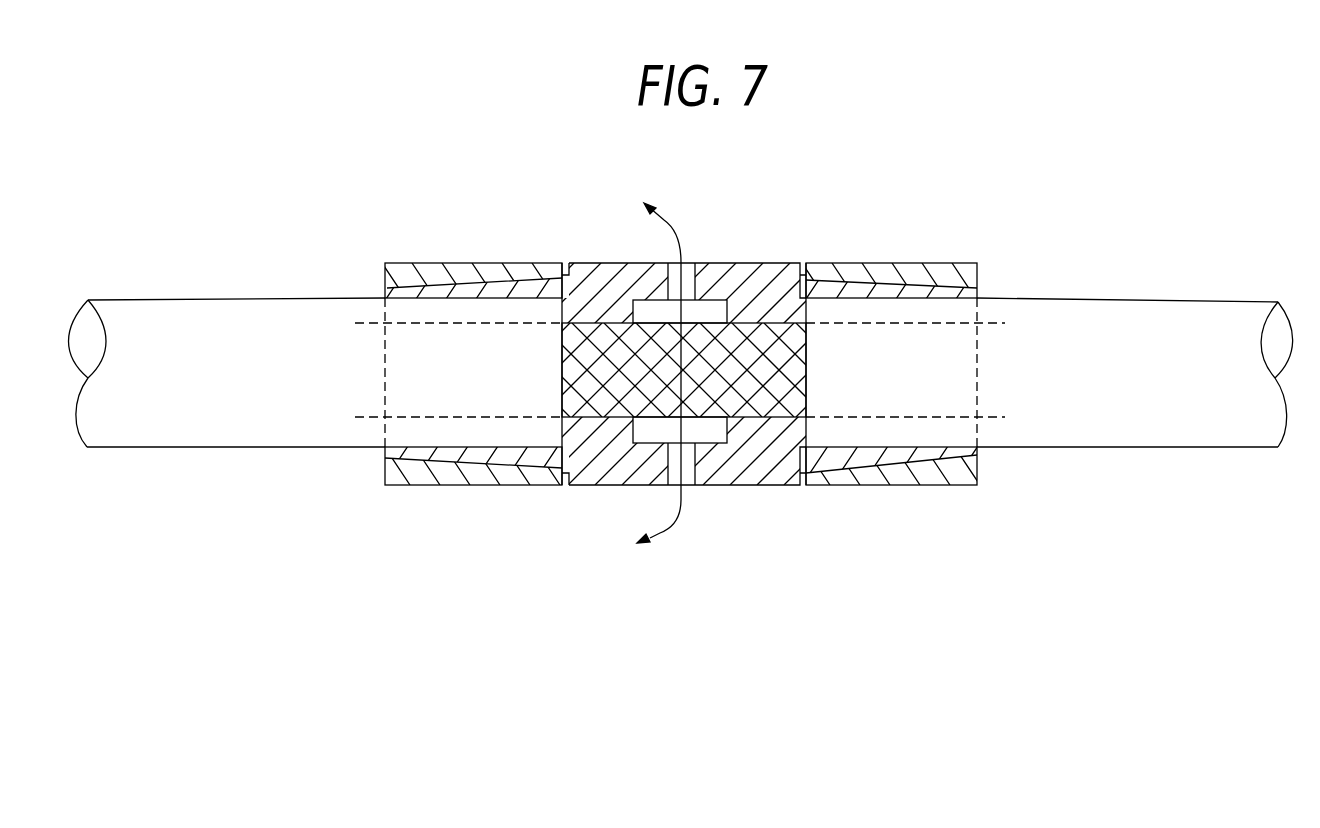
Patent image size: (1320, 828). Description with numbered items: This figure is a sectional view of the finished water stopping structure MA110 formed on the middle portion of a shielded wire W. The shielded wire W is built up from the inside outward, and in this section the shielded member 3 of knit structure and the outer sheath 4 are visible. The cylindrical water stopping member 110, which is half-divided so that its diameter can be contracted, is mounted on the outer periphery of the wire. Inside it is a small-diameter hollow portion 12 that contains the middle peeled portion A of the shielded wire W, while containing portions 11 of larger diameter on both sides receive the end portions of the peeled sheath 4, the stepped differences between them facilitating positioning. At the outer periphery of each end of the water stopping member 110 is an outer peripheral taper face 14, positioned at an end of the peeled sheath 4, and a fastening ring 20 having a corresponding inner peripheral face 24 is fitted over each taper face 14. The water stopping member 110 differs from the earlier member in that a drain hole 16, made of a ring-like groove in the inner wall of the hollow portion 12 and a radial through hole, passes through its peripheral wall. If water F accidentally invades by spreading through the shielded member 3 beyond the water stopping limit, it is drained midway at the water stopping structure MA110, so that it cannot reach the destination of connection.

The shielded wire W is at (233, 447).
The water stopping member 110 is at (666, 366).
The fastening ring 20 is at (458, 262).
The outer peripheral taper face 14 is at (527, 287).
The inner peripheral face 24 is at (442, 290).
The hollow portion 12 is at (594, 338).
The drain hole 16 is at (690, 263).
The water F is at (806, 372).
The shielded member 3 is at (770, 380).
The sheath 4 is at (410, 435).
The containing portion 11 is at (490, 447).
The middle peeled portion A is at (612, 421).
The water stopping structure MA110 is at (548, 562).